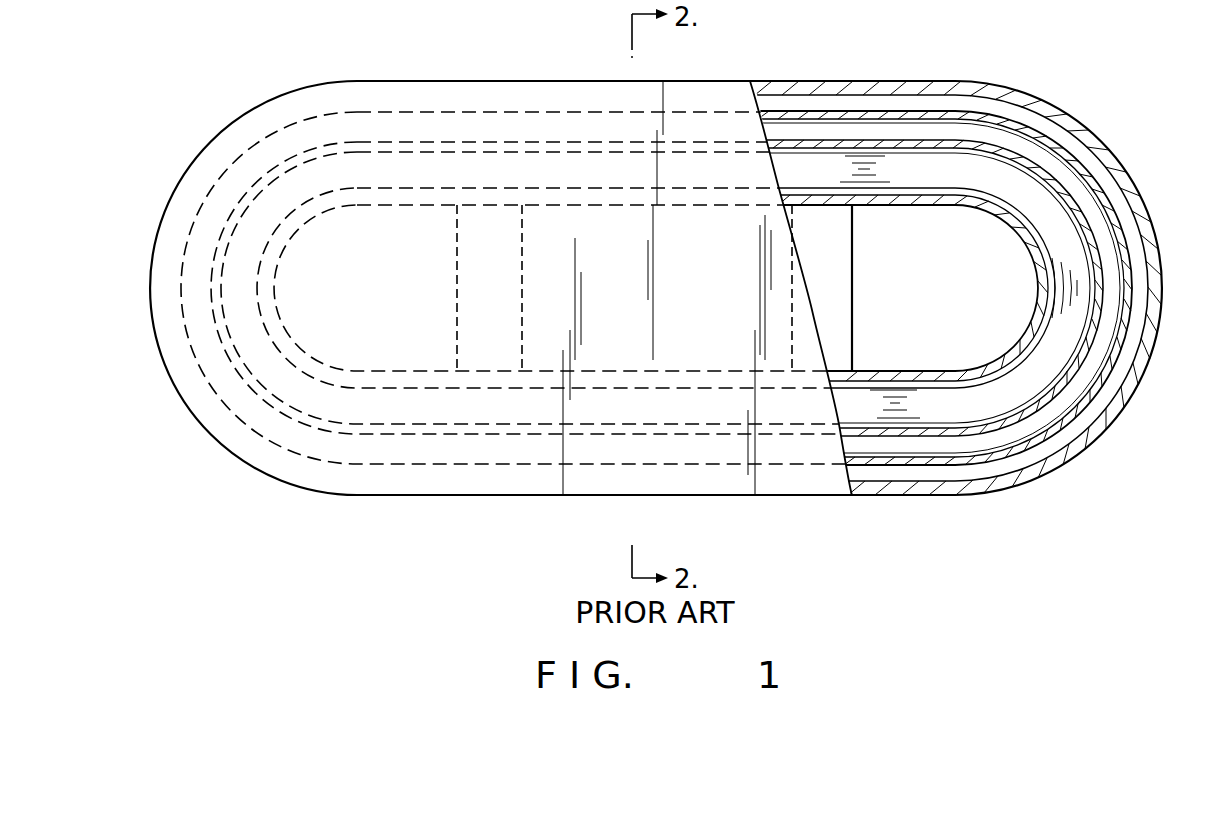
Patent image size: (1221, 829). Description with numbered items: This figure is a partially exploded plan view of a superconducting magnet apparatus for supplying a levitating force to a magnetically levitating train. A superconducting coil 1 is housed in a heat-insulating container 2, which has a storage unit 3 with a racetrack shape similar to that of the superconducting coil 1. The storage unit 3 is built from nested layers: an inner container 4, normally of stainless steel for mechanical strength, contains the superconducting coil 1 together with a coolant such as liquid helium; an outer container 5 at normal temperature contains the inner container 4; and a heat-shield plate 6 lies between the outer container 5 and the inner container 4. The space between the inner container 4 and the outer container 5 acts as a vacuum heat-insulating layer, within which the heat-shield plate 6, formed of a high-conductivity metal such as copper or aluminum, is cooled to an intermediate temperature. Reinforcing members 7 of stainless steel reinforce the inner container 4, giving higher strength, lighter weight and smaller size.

The superconducting coil 1 is at (1072, 258).
The heat-insulating container 2 is at (512, 76).
The storage unit 3 is at (908, 150).
The inner container 4 is at (826, 138).
The outer container 5 is at (1017, 93).
The heat-shield plate 6 is at (1060, 148).
The reinforcing members 7 is at (456, 314).